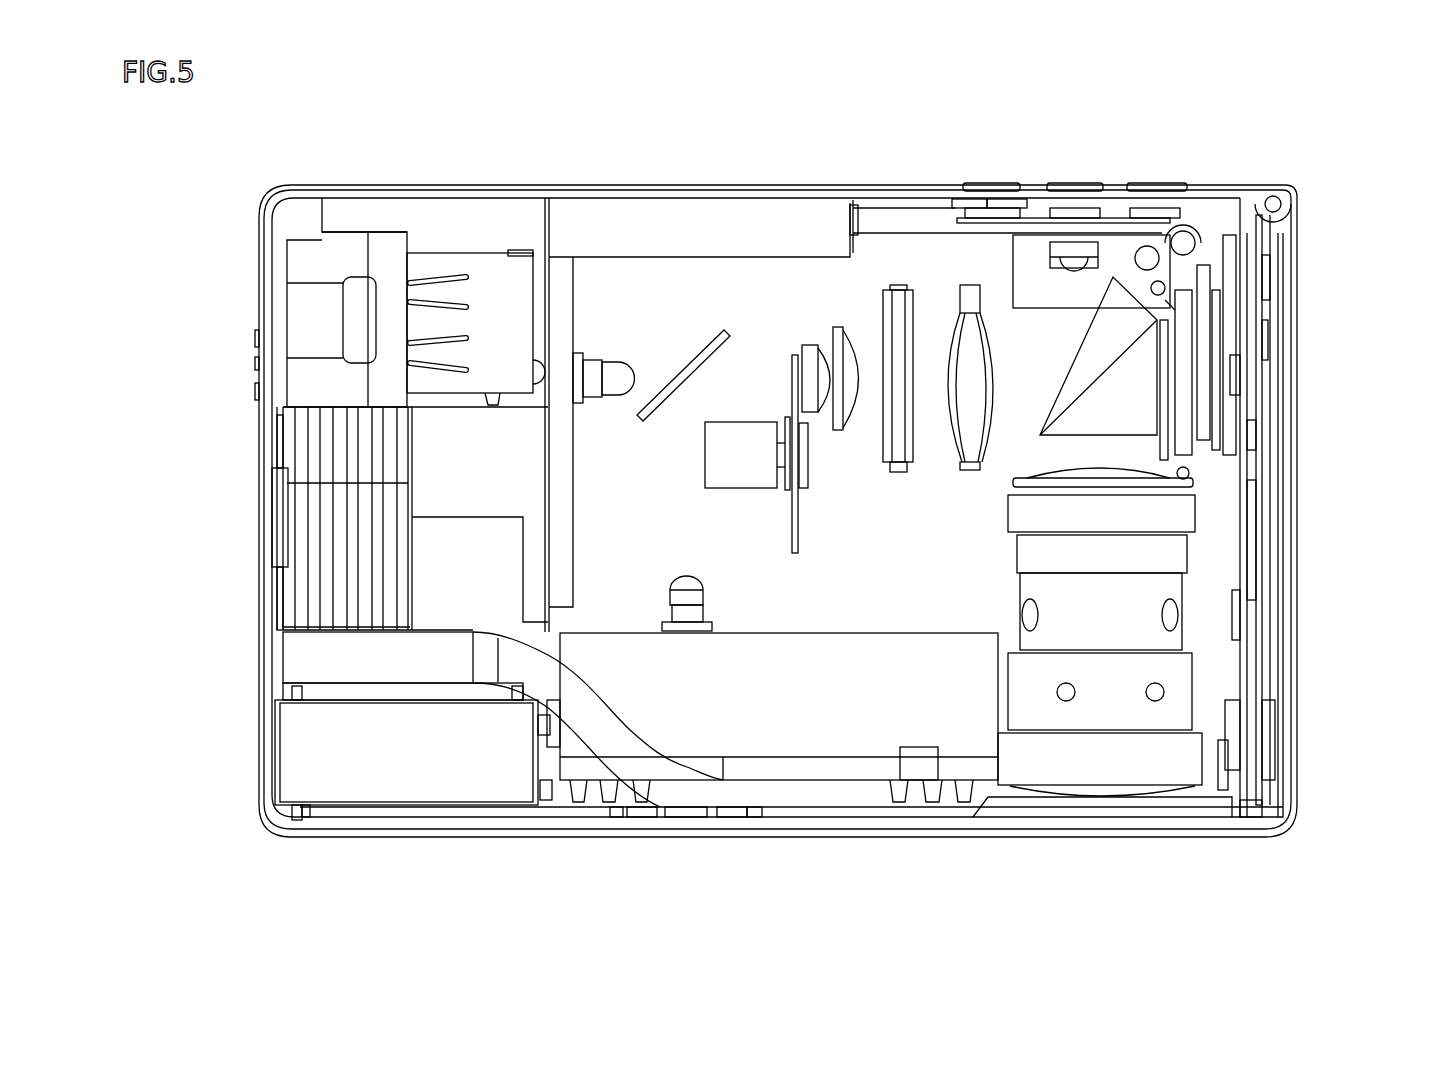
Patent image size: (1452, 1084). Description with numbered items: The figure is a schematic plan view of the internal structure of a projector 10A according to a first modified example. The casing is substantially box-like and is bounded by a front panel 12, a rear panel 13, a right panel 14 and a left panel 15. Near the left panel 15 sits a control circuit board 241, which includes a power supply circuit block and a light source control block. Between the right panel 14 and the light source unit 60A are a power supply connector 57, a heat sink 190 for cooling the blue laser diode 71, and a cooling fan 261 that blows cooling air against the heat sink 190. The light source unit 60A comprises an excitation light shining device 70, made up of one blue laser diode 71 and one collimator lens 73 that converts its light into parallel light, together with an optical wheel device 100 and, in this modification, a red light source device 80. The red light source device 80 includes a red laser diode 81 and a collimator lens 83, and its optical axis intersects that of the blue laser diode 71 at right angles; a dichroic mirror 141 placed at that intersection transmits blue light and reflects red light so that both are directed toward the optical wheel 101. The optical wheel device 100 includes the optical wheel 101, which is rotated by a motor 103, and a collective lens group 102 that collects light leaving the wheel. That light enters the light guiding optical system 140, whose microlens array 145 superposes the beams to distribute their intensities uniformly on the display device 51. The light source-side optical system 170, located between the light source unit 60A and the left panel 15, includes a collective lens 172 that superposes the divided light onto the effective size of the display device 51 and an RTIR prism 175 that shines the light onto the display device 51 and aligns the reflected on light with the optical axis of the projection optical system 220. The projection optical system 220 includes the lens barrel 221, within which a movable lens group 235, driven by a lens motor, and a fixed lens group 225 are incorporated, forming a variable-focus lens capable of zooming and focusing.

The projector 10A is at (1312, 160).
The front panel 12 is at (404, 840).
The rear panel 13 is at (378, 188).
The right panel 14 is at (262, 462).
The left panel 15 is at (1295, 418).
The display device 51 is at (1180, 335).
The power supply connector 57 is at (318, 252).
The light source unit 60A is at (757, 326).
The excitation light shining device 70 is at (594, 312).
The blue laser diode 71 is at (590, 355).
The collimator lens 73 is at (608, 355).
The red light source device 80 is at (772, 764).
The red laser diode 81 is at (686, 632).
The collimator lens 83 is at (700, 600).
The optical wheel device 100 is at (692, 468).
The optical wheel 101 is at (790, 522).
The collective lens group 102 is at (822, 332).
The motor 103 is at (725, 447).
The light guiding optical system 140 is at (938, 277).
The dichroic mirror 141 is at (702, 352).
The microlens array 145 is at (892, 290).
The light source-side optical system 170 is at (1052, 337).
The collective lens 172 is at (968, 290).
The RTIR prism 175 is at (1110, 325).
The heat sink 190 is at (450, 452).
The projection optical system 220 is at (1191, 701).
The lens barrel 221 is at (1200, 633).
The fixed lens group 225 is at (1128, 755).
The movable lens group 235 is at (1118, 598).
The control circuit board 241 is at (1262, 684).
The cooling fan 261 is at (338, 752).